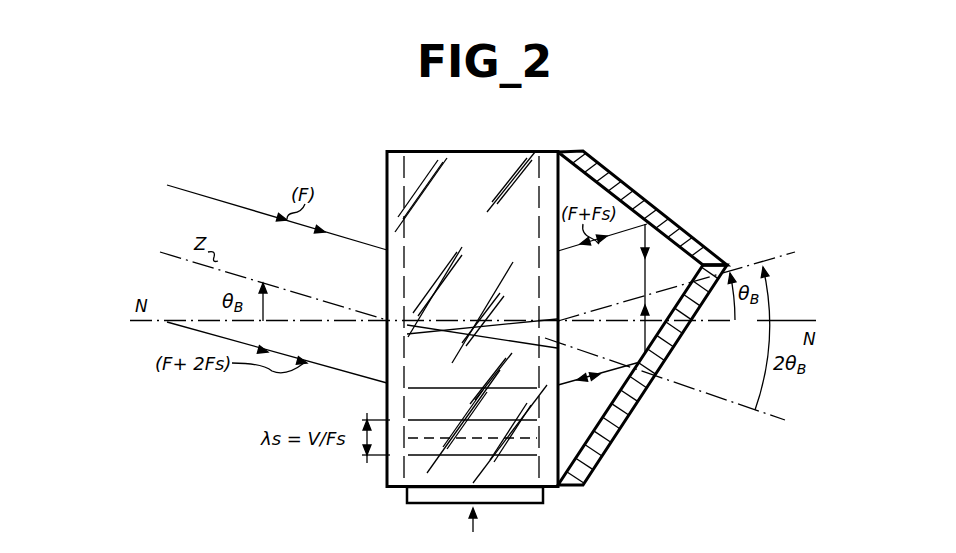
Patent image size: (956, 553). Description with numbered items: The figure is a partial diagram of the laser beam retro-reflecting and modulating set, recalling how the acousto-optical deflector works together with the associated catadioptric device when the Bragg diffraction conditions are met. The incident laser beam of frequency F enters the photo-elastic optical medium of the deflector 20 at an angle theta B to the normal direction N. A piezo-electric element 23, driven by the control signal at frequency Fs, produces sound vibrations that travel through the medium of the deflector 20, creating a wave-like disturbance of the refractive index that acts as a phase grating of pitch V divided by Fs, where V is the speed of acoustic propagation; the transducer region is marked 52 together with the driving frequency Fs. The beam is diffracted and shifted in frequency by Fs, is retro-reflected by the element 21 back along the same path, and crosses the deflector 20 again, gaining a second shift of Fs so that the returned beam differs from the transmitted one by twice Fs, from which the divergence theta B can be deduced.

The deflector 20 is at (547, 160).
The retro-reflecting element 21 is at (605, 168).
The piezo-electric element 23 is at (527, 503).
The acoustic transducer 52 is at (468, 510).